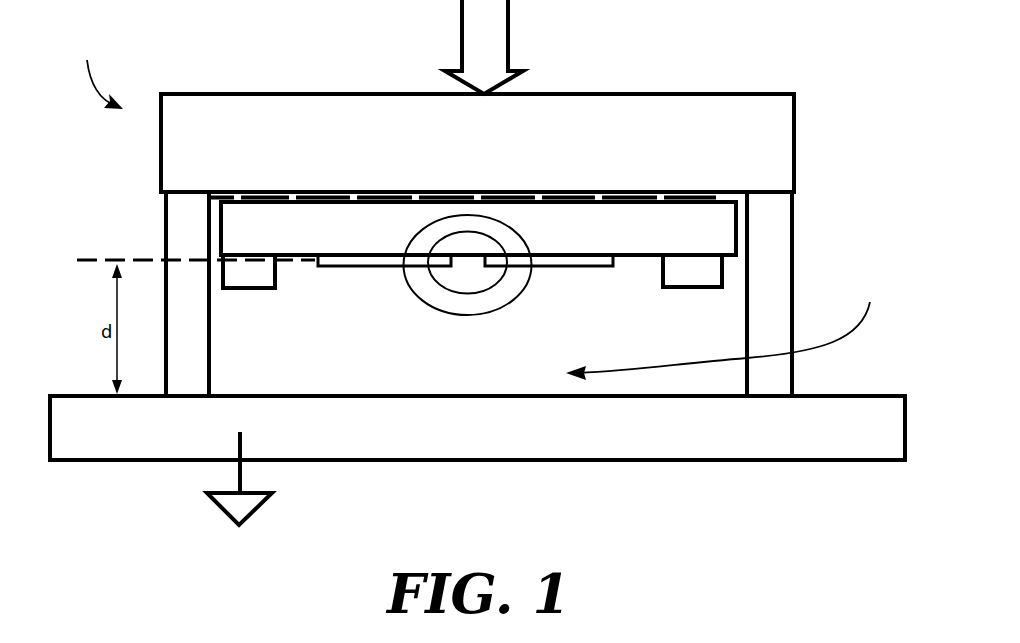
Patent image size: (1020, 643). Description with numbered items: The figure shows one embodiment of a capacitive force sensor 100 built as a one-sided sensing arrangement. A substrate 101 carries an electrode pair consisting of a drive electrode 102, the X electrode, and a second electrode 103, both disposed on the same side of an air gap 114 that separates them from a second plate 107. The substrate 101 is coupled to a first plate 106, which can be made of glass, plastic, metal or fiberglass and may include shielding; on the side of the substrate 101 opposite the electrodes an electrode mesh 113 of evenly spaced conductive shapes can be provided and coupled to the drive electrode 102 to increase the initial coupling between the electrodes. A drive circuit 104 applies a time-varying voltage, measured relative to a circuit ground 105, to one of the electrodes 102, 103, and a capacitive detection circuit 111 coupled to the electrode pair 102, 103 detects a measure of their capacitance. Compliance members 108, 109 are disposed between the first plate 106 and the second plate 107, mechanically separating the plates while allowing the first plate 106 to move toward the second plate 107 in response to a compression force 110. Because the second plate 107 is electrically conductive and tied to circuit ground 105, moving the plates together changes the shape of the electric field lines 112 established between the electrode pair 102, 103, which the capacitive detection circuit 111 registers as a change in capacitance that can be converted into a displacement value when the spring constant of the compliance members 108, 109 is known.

The capacitive force sensor 100 is at (97, 72).
The substrate 101 is at (587, 232).
The drive electrode 102 is at (548, 268).
The electrode 103 is at (387, 270).
The drive circuit 104 is at (237, 273).
The circuit ground 105 is at (253, 517).
The first plate 106 is at (583, 126).
The second plate 107 is at (492, 440).
The compliance member 108 is at (182, 232).
The compliance member 109 is at (767, 292).
The compression force 110 is at (492, 50).
The capacitive detection circuit 111 is at (698, 272).
The electric field lines 112 is at (453, 315).
The electrode mesh 113 is at (323, 200).
The air gap 114 is at (731, 327).